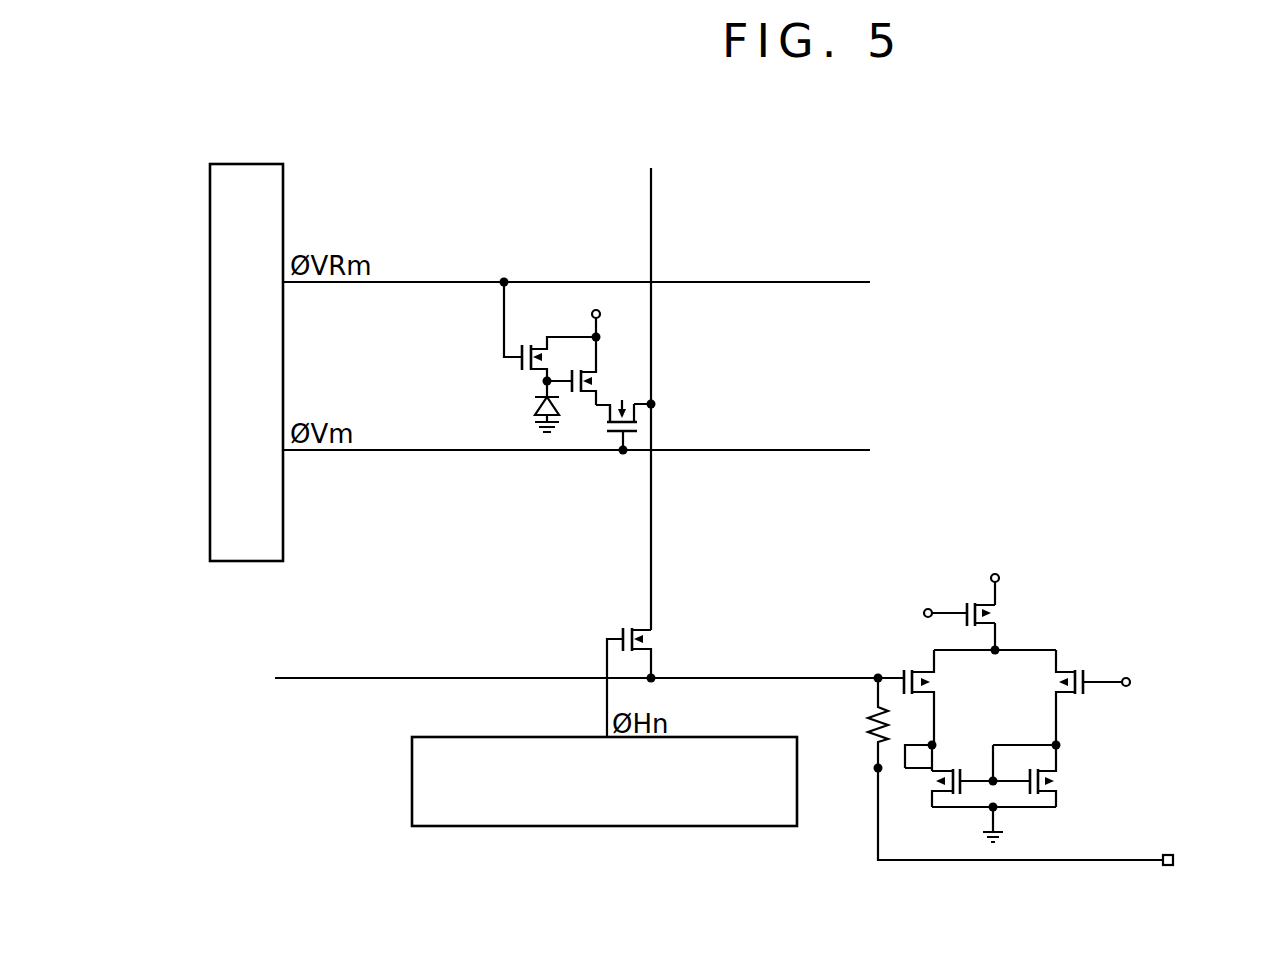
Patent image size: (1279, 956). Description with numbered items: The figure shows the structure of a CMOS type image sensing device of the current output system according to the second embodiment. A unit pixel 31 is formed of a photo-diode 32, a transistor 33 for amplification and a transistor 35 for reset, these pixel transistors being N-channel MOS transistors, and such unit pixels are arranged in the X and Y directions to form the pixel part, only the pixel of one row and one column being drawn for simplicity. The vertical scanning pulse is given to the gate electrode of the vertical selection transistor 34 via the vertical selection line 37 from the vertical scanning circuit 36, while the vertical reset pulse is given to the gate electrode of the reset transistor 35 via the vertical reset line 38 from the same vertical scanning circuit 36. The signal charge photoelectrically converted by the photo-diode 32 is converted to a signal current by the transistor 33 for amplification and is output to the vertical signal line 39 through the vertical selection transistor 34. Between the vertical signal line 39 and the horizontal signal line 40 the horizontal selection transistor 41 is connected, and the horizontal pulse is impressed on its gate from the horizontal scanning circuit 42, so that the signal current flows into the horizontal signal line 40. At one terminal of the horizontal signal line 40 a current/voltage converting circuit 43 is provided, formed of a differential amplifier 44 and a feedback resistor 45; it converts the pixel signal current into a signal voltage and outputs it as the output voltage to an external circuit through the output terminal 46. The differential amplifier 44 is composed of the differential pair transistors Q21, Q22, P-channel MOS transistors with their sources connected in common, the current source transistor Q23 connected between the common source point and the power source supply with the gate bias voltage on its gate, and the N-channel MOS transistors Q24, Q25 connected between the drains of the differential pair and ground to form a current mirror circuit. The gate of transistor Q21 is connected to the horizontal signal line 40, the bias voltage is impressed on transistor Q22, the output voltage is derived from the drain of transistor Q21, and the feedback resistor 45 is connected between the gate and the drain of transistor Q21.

The unit pixel 31 is at (696, 232).
The photo-diode 32 is at (530, 400).
The transistor for amplification 33 is at (600, 375).
The vertical selection transistor 34 is at (632, 396).
The transistor for reset 35 is at (536, 342).
The vertical scanning circuit 36 is at (252, 164).
The vertical selection line 37 is at (685, 452).
The vertical reset line 38 is at (677, 283).
The vertical signal line 39 is at (653, 553).
The horizontal signal line 40 is at (435, 675).
The horizontal selection transistor 41 is at (652, 634).
The horizontal scanning circuit 42 is at (432, 828).
The current/voltage converting circuit 43 is at (1009, 777).
The differential amplifier 44 is at (1020, 588).
The feedback resistor 45 is at (868, 720).
The output terminal 46 is at (1172, 853).
The differential pair transistor Q21 is at (935, 670).
The differential pair transistor Q22 is at (1058, 686).
The current source transistor Q23 is at (1000, 608).
The N-channel MOS transistor Q24 is at (930, 783).
The N-channel MOS transistor Q25 is at (1060, 772).